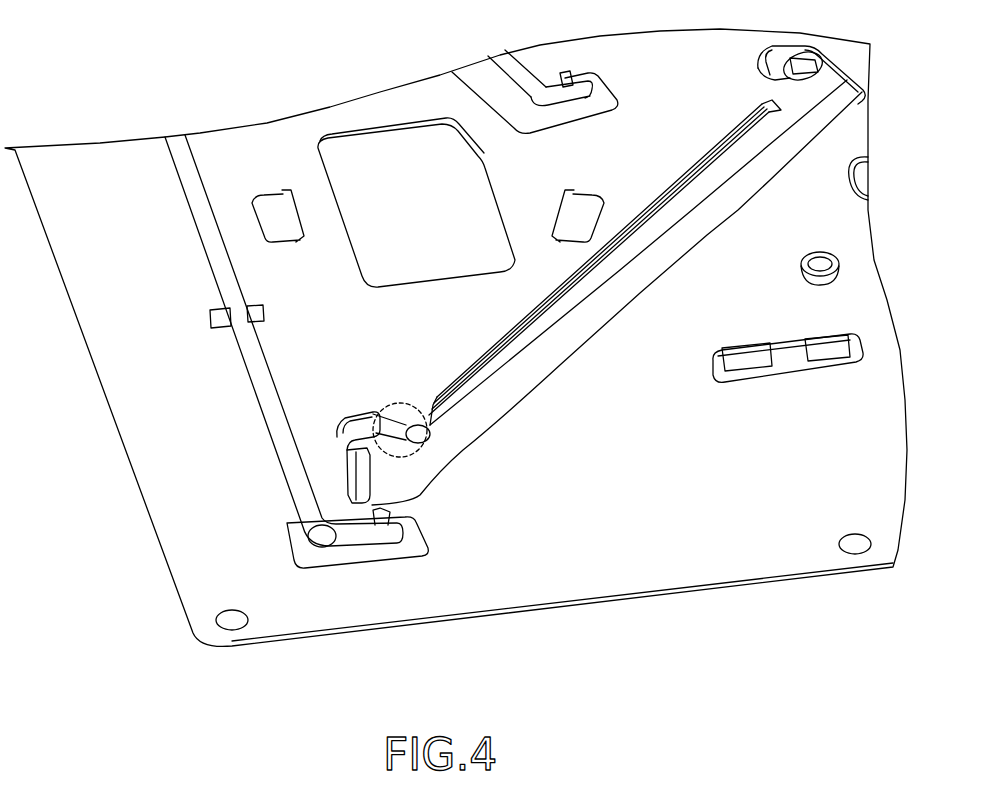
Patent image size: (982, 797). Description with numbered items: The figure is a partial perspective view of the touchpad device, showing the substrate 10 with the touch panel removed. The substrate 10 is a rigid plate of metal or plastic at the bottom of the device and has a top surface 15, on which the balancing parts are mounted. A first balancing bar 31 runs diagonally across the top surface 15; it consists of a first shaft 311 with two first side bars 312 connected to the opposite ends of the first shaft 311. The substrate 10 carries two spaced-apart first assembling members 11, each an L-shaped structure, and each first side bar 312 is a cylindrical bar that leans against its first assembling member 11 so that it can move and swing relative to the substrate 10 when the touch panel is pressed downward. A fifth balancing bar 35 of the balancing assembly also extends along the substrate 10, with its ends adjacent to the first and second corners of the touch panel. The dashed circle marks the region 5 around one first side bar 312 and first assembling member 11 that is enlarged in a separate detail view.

The substrate 10 is at (657, 598).
The top surface 15 is at (713, 532).
The region 5 is at (423, 448).
The first assembling member 11 is at (837, 77).
The first balancing bar 31 is at (803, 106).
The first shaft 311 is at (757, 140).
The first side bar 312 is at (828, 58).
The fifth balancing bar 35 is at (207, 228).